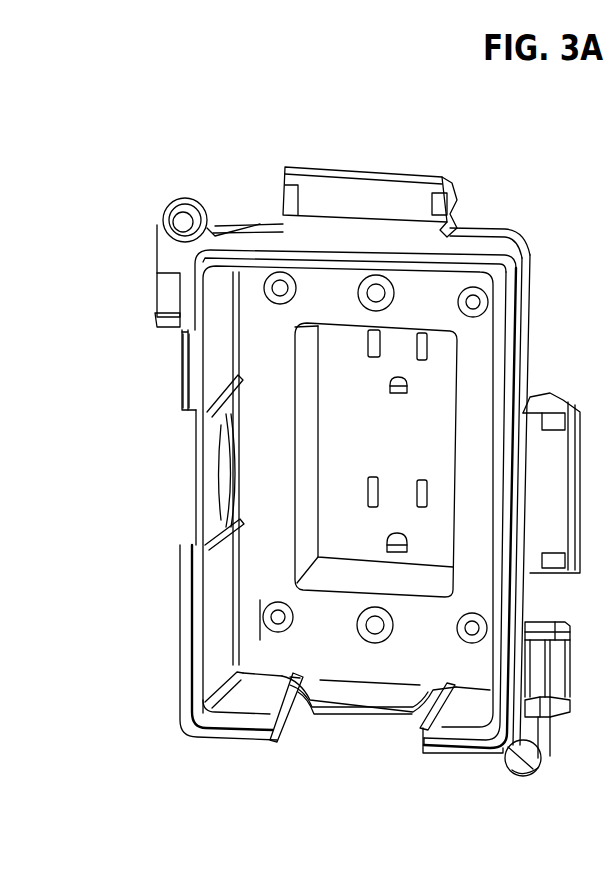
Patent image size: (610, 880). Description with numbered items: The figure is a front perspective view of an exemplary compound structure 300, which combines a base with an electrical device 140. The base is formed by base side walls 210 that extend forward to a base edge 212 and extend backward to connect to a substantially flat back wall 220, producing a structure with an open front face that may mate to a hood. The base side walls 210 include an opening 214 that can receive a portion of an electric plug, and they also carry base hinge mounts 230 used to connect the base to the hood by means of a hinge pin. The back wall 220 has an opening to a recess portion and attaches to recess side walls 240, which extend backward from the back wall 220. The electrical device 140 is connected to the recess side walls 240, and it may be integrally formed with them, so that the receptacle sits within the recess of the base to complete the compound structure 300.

The compound structure 300 is at (220, 168).
The electrical device 140 is at (423, 452).
The base side walls 210 is at (232, 605).
The base edge 212 is at (190, 374).
The opening 214 is at (178, 488).
The back wall 220 is at (360, 665).
The base hinge mounts 230 is at (366, 215).
The recess side walls 240 is at (313, 458).